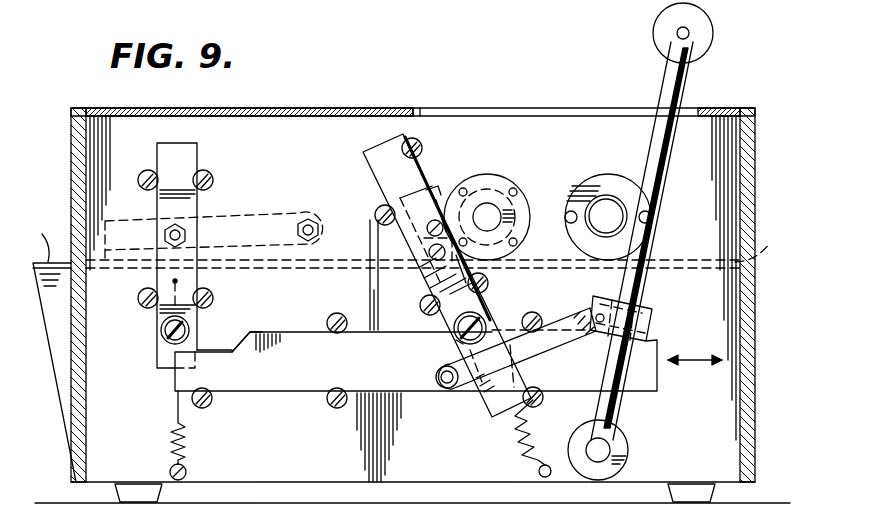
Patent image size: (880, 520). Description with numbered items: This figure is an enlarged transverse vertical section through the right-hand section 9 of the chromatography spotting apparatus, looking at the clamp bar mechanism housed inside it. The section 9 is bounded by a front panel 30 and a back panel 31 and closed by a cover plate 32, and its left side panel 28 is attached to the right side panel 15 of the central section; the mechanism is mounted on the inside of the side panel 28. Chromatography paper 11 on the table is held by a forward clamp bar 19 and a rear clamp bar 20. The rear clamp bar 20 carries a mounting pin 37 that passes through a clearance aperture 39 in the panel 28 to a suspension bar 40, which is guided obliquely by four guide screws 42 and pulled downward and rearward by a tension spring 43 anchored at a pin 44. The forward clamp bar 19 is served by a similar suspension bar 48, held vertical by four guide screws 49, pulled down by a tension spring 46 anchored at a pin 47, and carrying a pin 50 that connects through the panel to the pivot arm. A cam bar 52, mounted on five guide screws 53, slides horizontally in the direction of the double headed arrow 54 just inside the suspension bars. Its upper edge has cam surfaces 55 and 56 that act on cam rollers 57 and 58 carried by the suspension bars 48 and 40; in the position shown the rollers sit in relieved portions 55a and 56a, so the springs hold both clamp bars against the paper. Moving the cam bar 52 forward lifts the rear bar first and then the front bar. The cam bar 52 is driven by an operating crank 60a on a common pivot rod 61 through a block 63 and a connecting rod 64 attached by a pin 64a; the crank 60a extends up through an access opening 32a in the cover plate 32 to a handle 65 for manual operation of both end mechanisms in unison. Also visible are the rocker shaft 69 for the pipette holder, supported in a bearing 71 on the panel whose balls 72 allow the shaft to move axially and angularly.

The right-hand section 9 is at (591, 100).
The chromatography paper 11 is at (418, 243).
The right side panel 15 is at (53, 346).
The forward clamp bar 19 is at (106, 237).
The rear clamp bar 20 is at (425, 243).
The left side panel 28 is at (508, 130).
The front panel 30 is at (71, 162).
The back panel 31 is at (755, 168).
The cover plate 32 is at (708, 108).
The access opening 32a is at (470, 106).
The mounting pin 37 is at (417, 273).
The clearance aperture 39 is at (432, 189).
The suspension bar 40 is at (383, 178).
The guide screws 42 is at (422, 146).
The tension spring 43 is at (522, 438).
The pin 44 is at (538, 470).
The tension spring 46 is at (172, 438).
The pin 47 is at (187, 468).
The suspension bar 48 is at (185, 147).
The guide screws 49 is at (142, 172).
The pin 50 is at (184, 233).
The cam bar 52 is at (278, 392).
The guide screws 53 is at (205, 408).
The double headed arrow 54 is at (696, 358).
The cam surface 55 is at (243, 338).
The relieved portion 55a is at (213, 351).
The cam surface 56 is at (492, 318).
The relieved portion 56a is at (456, 340).
The cam roller 57 is at (162, 334).
The cam roller 58 is at (489, 300).
The operating crank 60a is at (620, 410).
The pivot rod 61 is at (604, 446).
The block 63 is at (650, 306).
The connecting rod 64 is at (546, 348).
The pin 64a is at (436, 376).
The handle 65 is at (703, 30).
The rocker shaft 69 is at (570, 195).
The bearing 71 is at (605, 176).
The balls 72 is at (625, 203).